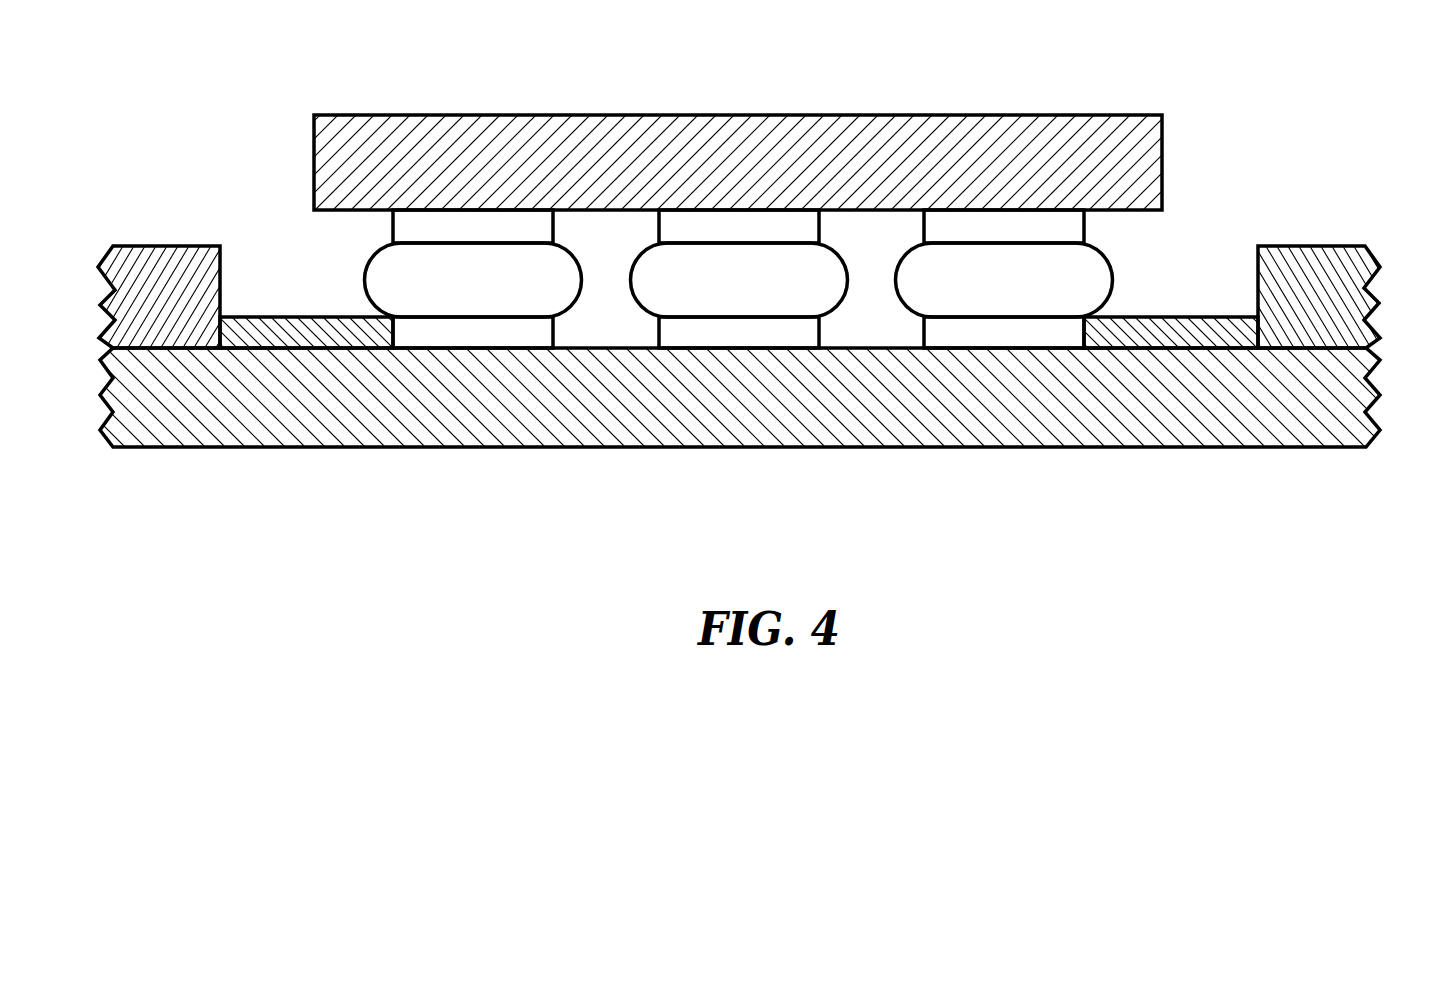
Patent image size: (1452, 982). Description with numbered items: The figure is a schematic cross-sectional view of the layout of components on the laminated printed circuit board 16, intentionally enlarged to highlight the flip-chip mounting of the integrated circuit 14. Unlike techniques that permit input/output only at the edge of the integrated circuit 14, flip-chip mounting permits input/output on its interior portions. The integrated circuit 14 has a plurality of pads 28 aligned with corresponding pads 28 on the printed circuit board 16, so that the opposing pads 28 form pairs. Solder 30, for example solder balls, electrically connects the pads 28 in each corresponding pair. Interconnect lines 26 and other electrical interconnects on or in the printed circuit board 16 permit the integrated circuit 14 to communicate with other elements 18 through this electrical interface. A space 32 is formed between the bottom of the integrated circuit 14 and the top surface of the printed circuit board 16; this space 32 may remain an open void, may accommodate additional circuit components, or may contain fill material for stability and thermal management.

The integrated circuit 14 is at (741, 128).
The laminated printed circuit board 16 is at (1390, 348).
The other elements 18 is at (174, 268).
The lines 26 is at (304, 334).
The pads 28 is at (459, 237).
The solder 30 is at (459, 294).
The space 32 is at (856, 259).